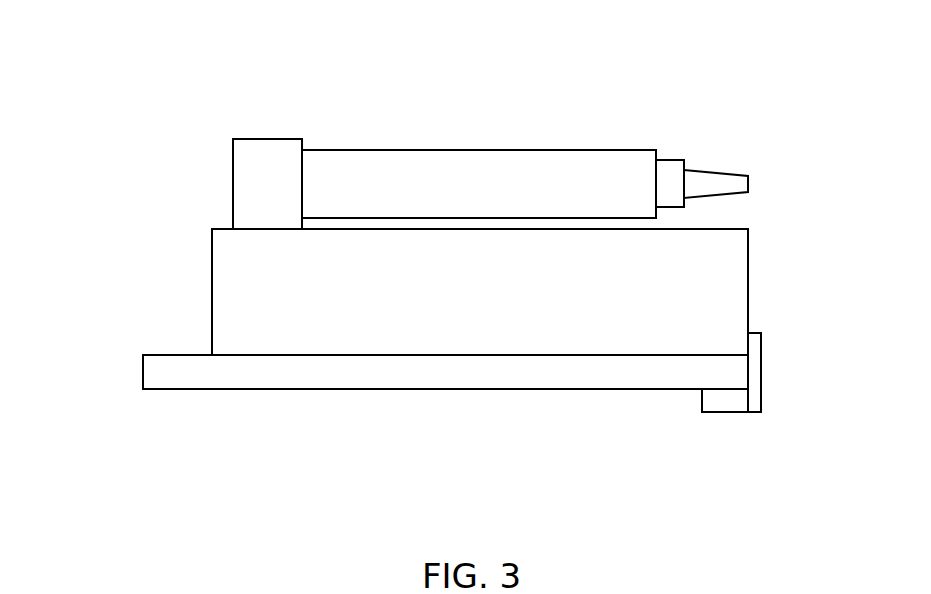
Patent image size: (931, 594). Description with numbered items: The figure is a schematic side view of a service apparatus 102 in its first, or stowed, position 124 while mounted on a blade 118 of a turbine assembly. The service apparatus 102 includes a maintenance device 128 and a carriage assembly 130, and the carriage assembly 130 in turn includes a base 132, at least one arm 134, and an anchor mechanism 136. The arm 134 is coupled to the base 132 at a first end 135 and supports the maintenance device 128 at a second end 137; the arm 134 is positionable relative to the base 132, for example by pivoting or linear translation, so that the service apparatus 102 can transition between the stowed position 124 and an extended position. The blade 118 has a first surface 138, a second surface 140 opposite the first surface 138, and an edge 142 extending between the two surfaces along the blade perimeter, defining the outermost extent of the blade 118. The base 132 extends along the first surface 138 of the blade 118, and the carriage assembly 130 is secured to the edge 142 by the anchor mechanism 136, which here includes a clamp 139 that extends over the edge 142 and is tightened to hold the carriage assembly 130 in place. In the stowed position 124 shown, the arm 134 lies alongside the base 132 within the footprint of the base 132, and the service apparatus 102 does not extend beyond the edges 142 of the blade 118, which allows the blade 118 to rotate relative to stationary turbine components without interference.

The service apparatus 102 is at (187, 67).
The blade 118 is at (155, 376).
The stowed position 124 is at (753, 117).
The maintenance device 128 is at (717, 176).
The carriage assembly 130 is at (212, 192).
The base 132 is at (222, 292).
The arm 134 is at (478, 165).
The first end 135 is at (303, 167).
The anchor mechanism 136 is at (762, 422).
The second end 137 is at (684, 167).
The first surface 138 is at (305, 355).
The clamp 139 is at (723, 403).
The second surface 140 is at (444, 389).
The edge 142 is at (748, 373).